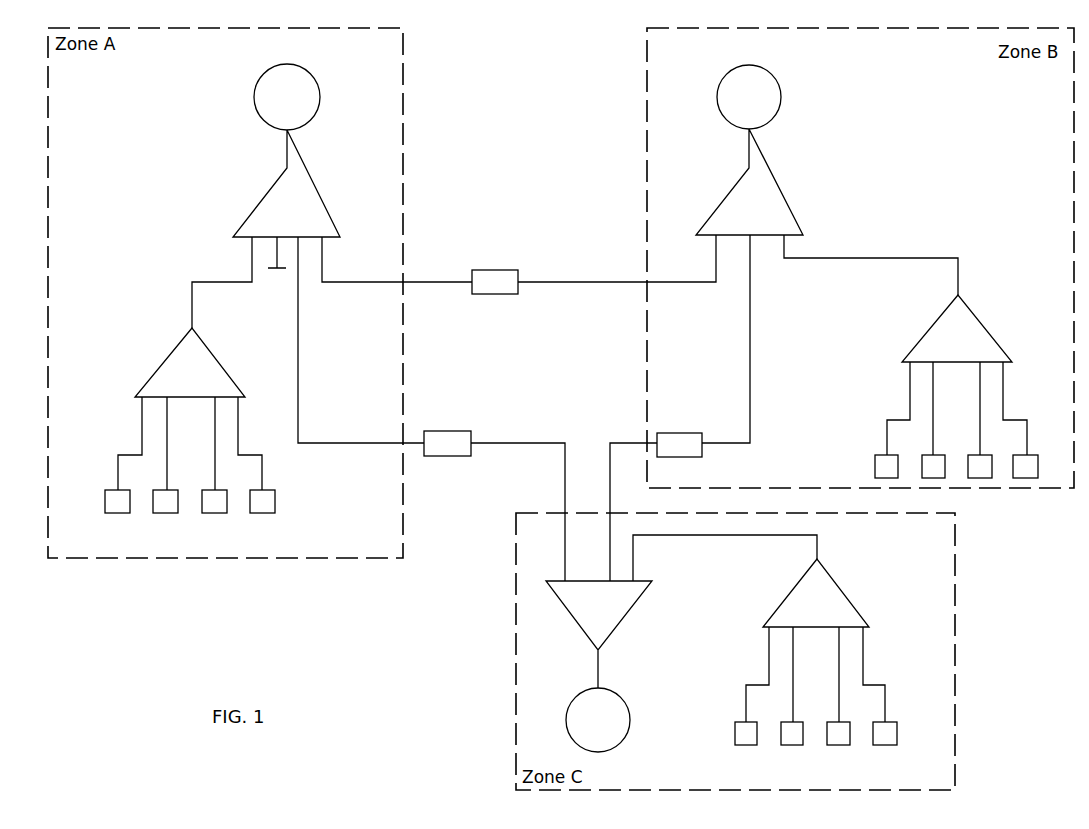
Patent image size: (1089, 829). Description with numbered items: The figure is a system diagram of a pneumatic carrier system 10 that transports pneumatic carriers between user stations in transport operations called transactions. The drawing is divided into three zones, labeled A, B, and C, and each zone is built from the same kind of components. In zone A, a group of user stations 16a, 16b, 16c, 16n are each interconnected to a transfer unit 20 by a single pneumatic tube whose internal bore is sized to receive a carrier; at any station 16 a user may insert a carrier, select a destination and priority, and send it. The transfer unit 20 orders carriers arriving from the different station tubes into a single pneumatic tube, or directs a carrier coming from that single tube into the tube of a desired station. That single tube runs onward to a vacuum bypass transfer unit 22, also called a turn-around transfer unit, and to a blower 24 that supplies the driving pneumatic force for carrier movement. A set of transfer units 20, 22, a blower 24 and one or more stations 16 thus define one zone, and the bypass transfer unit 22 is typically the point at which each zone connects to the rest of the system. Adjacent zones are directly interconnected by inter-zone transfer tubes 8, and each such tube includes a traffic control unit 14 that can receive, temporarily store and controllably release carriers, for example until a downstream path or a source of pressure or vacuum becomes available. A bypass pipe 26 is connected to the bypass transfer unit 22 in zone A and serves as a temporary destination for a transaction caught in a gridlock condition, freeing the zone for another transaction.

The inter-zone transfer tube 8 is at (368, 282).
The pneumatic carrier system 10 is at (345, 616).
The traffic control unit 14 is at (495, 286).
The user station 16 is at (1057, 470).
The user station 16a is at (120, 502).
The user station 16b is at (168, 502).
The user station 16c is at (216, 502).
The user station 16n is at (264, 502).
The transfer unit 20 is at (192, 375).
The vacuum bypass transfer unit 22 is at (298, 206).
The blower 24 is at (277, 96).
The bypass pipe 26 is at (270, 253).